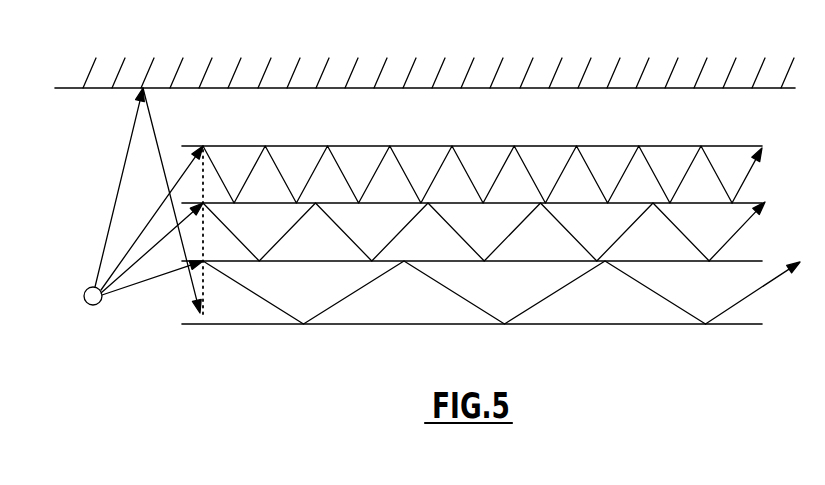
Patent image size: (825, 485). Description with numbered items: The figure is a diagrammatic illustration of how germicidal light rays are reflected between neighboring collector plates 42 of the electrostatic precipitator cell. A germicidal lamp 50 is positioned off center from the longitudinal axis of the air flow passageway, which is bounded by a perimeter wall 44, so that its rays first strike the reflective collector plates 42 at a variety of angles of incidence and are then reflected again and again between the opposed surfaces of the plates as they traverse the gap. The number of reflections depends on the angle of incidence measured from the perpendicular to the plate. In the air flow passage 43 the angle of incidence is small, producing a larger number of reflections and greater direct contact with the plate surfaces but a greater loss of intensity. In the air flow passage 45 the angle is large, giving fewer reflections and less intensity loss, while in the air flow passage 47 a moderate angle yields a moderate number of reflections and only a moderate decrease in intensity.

The collector plates 42 is at (612, 144).
The air flow passage 43 is at (298, 158).
The perimeter walls 44 is at (177, 89).
The air flow passage 45 is at (319, 299).
The air flow passage 47 is at (438, 252).
The germicidal lamp 50 is at (92, 306).